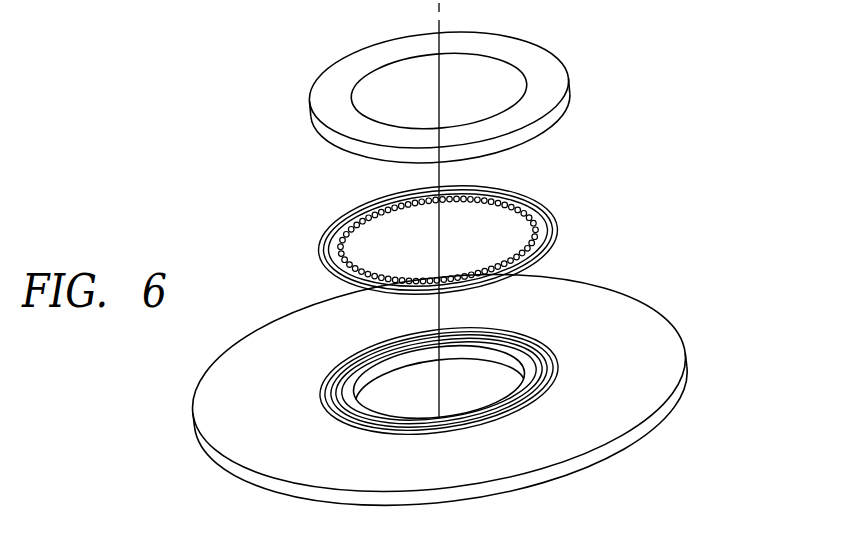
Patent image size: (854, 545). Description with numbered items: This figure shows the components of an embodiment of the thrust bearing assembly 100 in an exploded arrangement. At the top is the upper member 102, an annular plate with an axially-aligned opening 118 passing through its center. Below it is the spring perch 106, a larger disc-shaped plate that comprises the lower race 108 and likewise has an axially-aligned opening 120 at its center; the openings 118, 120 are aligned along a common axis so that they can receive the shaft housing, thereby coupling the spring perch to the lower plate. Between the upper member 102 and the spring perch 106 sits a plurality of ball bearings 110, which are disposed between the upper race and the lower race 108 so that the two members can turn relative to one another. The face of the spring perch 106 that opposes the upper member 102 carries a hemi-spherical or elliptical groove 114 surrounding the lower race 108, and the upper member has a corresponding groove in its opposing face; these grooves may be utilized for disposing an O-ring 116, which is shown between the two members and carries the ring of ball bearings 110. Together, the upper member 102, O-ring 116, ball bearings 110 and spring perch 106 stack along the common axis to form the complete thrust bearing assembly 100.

The thrust bearing assembly 100 is at (278, 193).
The upper member 102 is at (563, 62).
The opening 118 is at (378, 78).
The O-ring 116 is at (557, 219).
The ball bearings 110 is at (535, 232).
The spring perch 106 is at (655, 312).
The groove 114 is at (553, 358).
The lower race 108 is at (532, 353).
The opening 120 is at (367, 380).